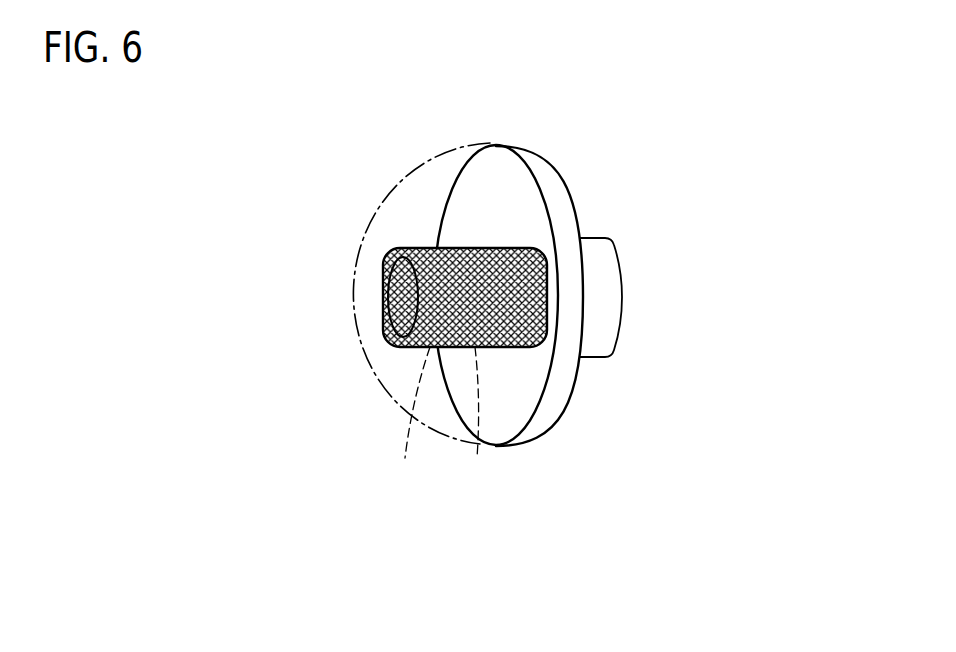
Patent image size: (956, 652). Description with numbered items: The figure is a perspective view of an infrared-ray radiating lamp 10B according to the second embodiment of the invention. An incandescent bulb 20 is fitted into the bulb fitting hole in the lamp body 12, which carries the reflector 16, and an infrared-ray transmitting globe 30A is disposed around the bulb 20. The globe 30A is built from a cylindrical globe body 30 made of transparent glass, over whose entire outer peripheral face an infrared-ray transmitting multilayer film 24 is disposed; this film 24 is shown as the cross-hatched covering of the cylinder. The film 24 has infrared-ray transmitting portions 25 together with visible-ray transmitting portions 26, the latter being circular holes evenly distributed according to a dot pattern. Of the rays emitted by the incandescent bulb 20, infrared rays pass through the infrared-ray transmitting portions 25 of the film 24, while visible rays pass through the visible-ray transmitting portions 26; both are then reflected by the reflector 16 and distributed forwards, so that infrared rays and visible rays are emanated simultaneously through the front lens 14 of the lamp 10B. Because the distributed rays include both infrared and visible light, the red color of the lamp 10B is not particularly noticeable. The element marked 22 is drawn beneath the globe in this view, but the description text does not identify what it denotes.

The infrared-ray radiating lamp 10B is at (342, 288).
The lamp body 12 is at (568, 200).
The front lens 14 is at (385, 197).
The reflector 16 is at (531, 180).
The incandescent bulb 20 is at (411, 422).
The support 22 is at (480, 422).
The infrared-ray transmitting multilayer film 24 is at (516, 258).
The infrared-ray transmitting portions 25 is at (465, 297).
The visible-ray transmitting portions 26 is at (403, 297).
The globe body 30 is at (487, 162).
The infrared-ray transmitting globe 30A is at (425, 248).